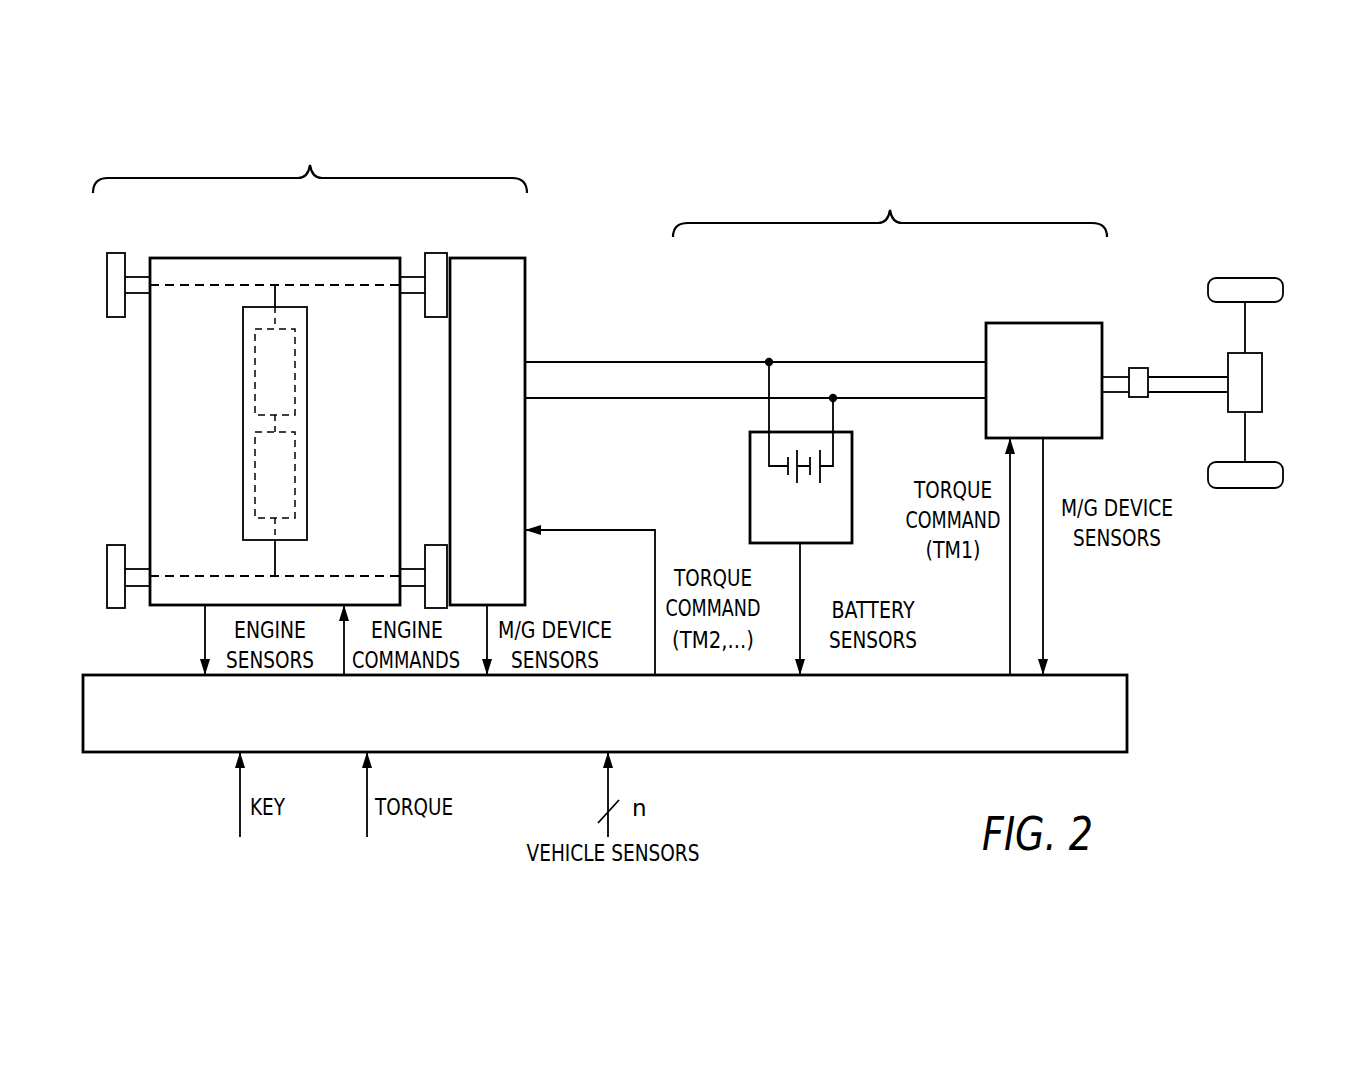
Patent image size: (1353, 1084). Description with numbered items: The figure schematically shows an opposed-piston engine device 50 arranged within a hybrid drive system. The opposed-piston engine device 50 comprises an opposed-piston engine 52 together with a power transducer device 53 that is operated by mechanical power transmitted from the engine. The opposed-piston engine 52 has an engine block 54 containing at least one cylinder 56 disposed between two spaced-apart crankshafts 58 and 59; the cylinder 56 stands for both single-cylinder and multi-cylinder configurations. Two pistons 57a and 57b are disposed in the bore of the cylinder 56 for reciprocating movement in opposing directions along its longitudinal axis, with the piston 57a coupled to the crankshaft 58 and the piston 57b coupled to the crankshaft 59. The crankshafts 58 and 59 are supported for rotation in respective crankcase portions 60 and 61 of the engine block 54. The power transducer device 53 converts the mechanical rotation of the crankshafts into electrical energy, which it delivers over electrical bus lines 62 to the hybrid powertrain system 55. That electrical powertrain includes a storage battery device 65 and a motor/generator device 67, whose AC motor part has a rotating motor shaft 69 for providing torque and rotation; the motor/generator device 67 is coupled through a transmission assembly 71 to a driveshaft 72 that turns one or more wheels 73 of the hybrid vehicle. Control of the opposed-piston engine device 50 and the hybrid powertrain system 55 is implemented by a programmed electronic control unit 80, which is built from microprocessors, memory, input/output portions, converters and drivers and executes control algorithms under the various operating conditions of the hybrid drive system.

The opposed-piston engine device 50 is at (310, 163).
The opposed-piston engine 52 is at (243, 245).
The power transducer device 53 is at (525, 290).
The engine block 54 is at (285, 258).
The hybrid powertrain system 55 is at (890, 207).
The cylinder 56 is at (307, 393).
The piston 57a is at (255, 362).
The piston 57b is at (255, 484).
The crankshaft 58 is at (408, 278).
The crankshaft 59 is at (410, 570).
The crankcase portion 60 is at (372, 264).
The crankcase portion 61 is at (378, 587).
The electrical bus lines 62 is at (600, 398).
The storage battery device 65 is at (750, 487).
The motor/generator device 67 is at (1037, 322).
The motor shaft 69 is at (1117, 372).
The transmission assembly 71 is at (1140, 397).
The driveshaft 72 is at (1172, 375).
The wheels 73 is at (1237, 278).
The electronic control unit 80 is at (1127, 707).